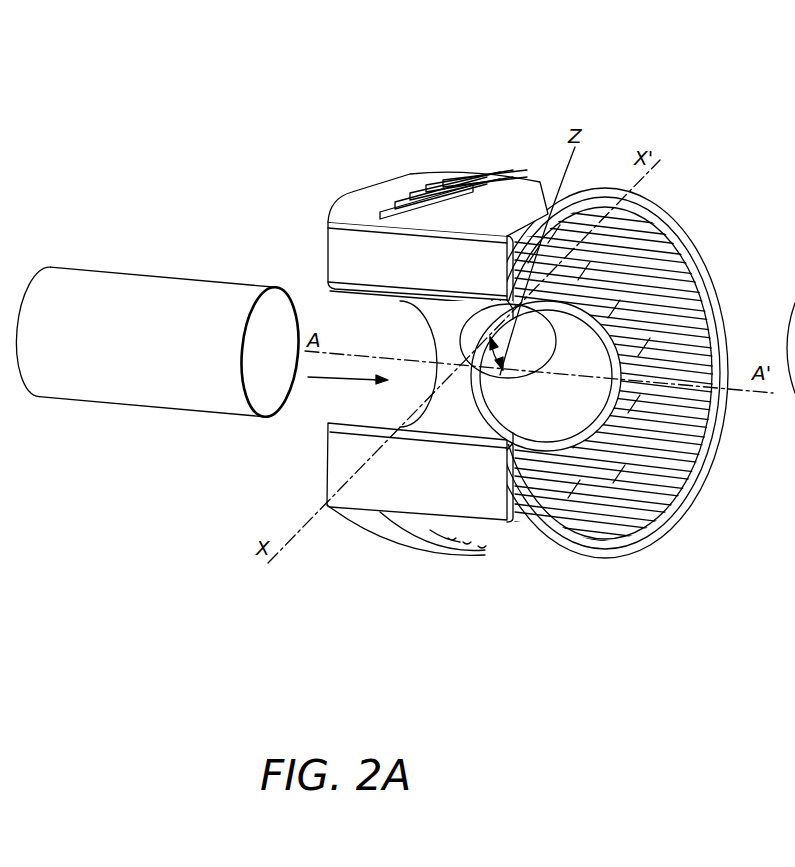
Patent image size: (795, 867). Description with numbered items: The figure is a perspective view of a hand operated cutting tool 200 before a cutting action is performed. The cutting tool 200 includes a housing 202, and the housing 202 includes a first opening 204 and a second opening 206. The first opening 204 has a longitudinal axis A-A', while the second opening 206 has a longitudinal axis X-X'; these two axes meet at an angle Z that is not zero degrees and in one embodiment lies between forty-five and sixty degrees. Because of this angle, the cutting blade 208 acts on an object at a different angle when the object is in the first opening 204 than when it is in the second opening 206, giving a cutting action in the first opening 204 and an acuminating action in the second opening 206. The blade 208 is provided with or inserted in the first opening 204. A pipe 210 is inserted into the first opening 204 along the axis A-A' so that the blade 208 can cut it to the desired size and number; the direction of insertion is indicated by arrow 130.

The hand operated cutting tool 200 is at (618, 126).
The housing 202 is at (353, 178).
The first opening 204 is at (320, 293).
The second opening 206 is at (610, 338).
The blade 208 is at (520, 343).
The pipe 210 is at (125, 273).
The flow direction 130 is at (327, 380).